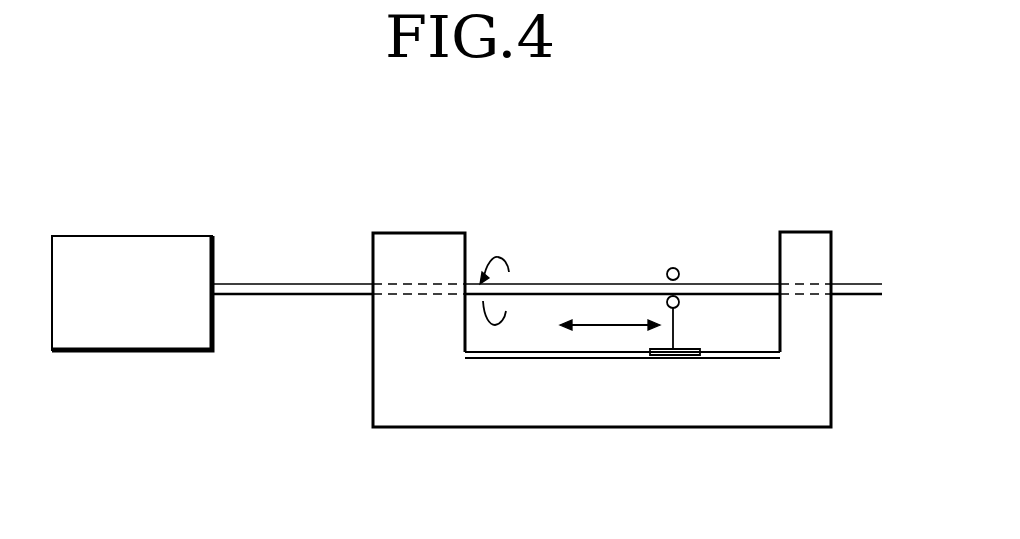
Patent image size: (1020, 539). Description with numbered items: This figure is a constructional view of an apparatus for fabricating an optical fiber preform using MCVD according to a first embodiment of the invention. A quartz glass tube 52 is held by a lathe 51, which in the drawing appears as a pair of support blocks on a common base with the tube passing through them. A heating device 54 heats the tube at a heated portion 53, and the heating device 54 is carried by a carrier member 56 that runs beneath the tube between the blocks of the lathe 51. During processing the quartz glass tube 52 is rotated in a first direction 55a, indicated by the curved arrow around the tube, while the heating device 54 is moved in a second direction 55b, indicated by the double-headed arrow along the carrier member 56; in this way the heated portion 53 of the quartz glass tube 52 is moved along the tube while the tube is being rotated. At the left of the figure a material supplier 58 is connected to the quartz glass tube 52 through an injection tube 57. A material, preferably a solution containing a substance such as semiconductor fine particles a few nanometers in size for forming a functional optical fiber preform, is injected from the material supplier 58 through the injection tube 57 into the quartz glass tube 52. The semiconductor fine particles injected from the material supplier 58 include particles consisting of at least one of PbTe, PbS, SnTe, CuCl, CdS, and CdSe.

The material supplier 58 is at (192, 235).
The injection tube 57 is at (396, 288).
The lathe 51 is at (425, 248).
The quartz glass tube 52 is at (753, 288).
The carrier member 56 is at (580, 360).
The heating device 54 is at (660, 358).
The heated portion 53 is at (678, 268).
The first direction 55a is at (502, 270).
The second direction 55b is at (613, 325).